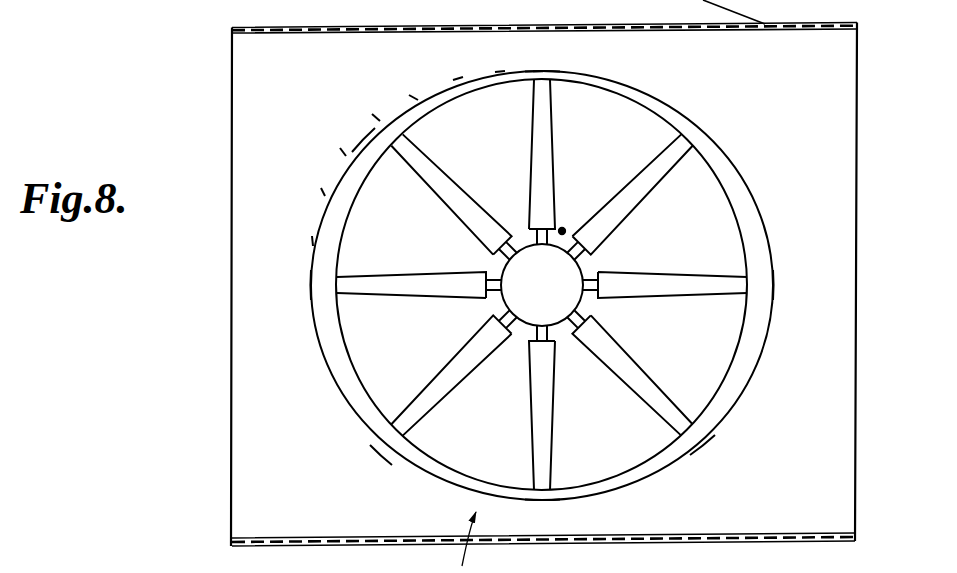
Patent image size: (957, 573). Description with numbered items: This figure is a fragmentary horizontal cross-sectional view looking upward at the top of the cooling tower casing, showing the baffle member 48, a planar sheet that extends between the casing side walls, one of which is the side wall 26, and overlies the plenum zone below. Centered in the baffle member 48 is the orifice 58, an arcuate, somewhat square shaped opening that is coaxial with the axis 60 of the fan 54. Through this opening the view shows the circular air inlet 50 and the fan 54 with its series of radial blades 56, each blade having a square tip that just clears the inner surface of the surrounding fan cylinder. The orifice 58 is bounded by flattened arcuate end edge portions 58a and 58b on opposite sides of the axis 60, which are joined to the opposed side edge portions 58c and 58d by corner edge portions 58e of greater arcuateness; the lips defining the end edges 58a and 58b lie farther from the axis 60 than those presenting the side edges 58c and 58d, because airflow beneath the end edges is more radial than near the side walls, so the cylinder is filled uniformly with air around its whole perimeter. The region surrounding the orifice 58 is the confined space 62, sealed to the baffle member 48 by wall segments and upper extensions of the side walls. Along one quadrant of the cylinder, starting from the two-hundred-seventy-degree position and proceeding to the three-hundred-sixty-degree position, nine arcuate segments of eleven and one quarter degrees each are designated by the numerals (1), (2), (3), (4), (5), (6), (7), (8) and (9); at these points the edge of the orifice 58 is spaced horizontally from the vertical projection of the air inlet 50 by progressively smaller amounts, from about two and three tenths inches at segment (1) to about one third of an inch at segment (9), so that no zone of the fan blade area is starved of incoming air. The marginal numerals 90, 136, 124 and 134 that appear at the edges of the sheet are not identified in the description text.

The baffle member 48 is at (238, 398).
The side wall 26 is at (608, 543).
The orifice 58 is at (348, 427).
The end edge portion 58a is at (311, 300).
The end edge portion 58b is at (774, 281).
The side edge portion 58c is at (548, 72).
The side edge portion 58d is at (548, 500).
The corner edge portion 58e is at (363, 140).
The air inlet 50 is at (723, 370).
The radial blades 56 is at (674, 274).
The axis 60 is at (539, 295).
The fan 54 is at (563, 228).
The confined space 62 is at (740, 80).
The arcuate segment 1 is at (311, 285).
The arcuate segment 2 is at (312, 241).
The arcuate segment 3 is at (323, 192).
The arcuate segment 4 is at (343, 152).
The arcuate segment 5 is at (376, 118).
The arcuate segment 6 is at (413, 97).
The arcuate segment 7 is at (458, 79).
The arcuate segment 8 is at (500, 71).
The arcuate segment 9 is at (538, 70).
The arrow direction 90 is at (479, 542).
The element 136 is at (122, 566).
The element 124 is at (212, 570).
The element 134 is at (777, 570).